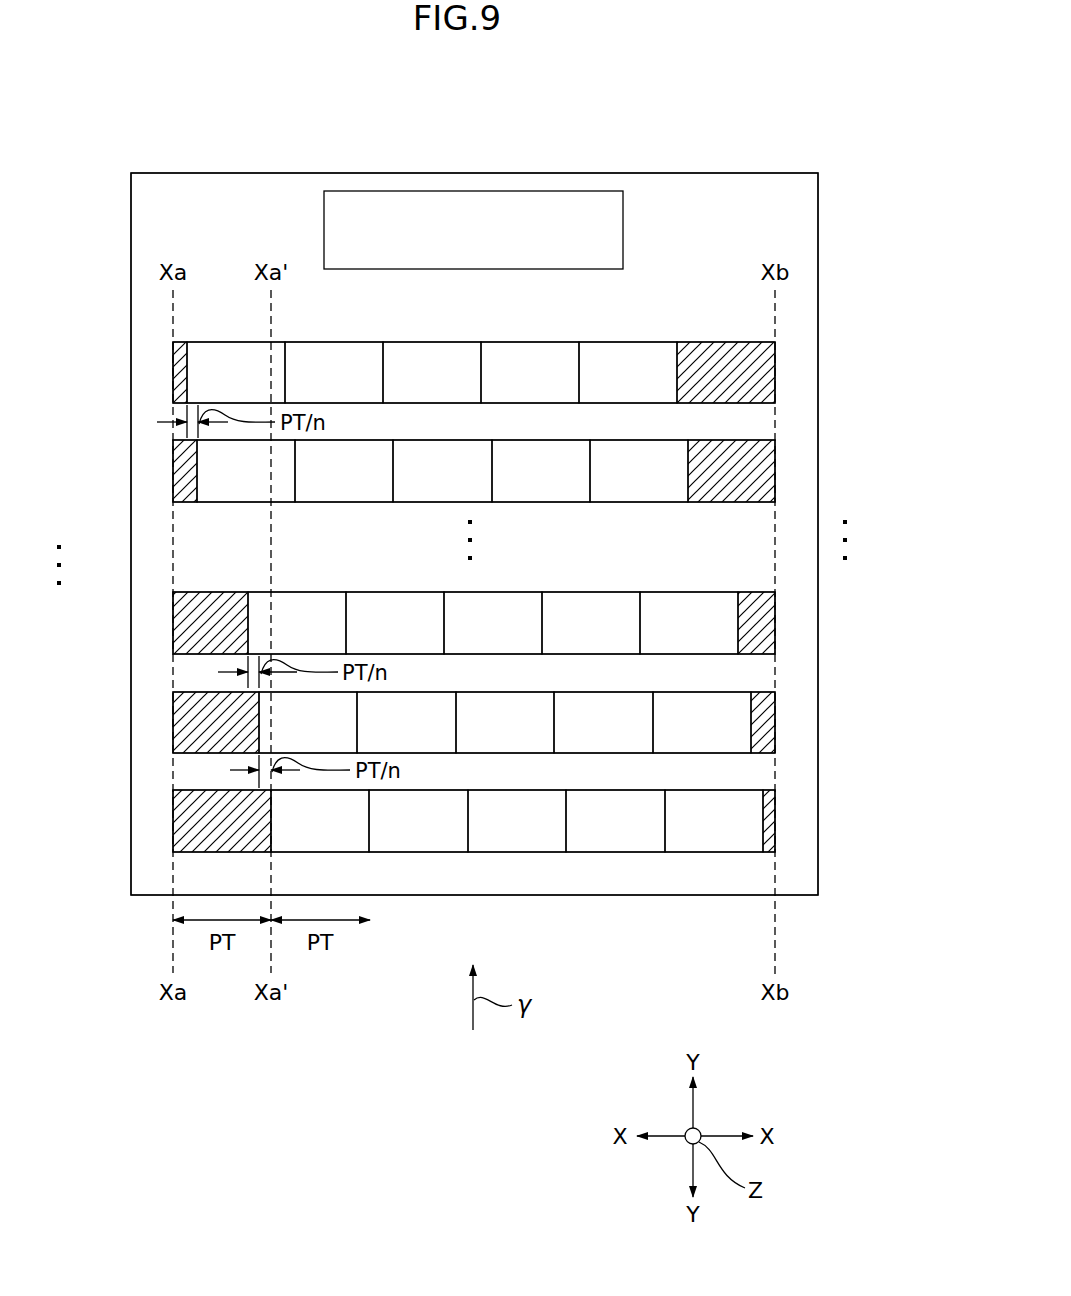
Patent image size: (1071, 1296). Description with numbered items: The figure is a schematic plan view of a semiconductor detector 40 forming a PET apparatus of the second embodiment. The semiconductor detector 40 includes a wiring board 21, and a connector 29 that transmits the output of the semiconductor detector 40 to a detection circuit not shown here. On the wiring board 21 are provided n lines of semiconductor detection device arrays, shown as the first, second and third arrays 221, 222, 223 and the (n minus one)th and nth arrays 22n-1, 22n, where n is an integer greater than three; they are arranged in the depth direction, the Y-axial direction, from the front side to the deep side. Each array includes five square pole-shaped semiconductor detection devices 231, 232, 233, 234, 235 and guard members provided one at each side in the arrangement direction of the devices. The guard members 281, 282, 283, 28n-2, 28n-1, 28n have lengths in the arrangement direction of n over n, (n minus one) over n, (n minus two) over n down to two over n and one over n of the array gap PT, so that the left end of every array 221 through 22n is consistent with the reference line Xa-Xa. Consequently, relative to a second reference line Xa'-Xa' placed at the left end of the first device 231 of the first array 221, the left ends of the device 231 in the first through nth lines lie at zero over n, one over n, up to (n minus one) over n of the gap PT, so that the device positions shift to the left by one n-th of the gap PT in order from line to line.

The semiconductor detector 40 is at (104, 96).
The wiring board 21 is at (650, 895).
The connector 29 is at (623, 230).
The semiconductor detection device array 22n is at (155, 372).
The semiconductor detection device array 22n-1 is at (155, 471).
The semiconductor detection device array 223 is at (155, 622).
The semiconductor detection device array 222 is at (155, 722).
The semiconductor detection device array 221 is at (155, 821).
The guard member 28n is at (177, 385).
The guard member 28n-1 is at (177, 483).
The guard member 28n-2 is at (758, 625).
The guard member 283 is at (177, 635).
The guard member 282 is at (177, 733).
The guard member 281 is at (177, 833).
The semiconductor detection device 231 is at (218, 386).
The semiconductor detection device 232 is at (316, 386).
The semiconductor detection device 233 is at (414, 386).
The semiconductor detection device 234 is at (512, 386).
The semiconductor detection device 235 is at (610, 386).